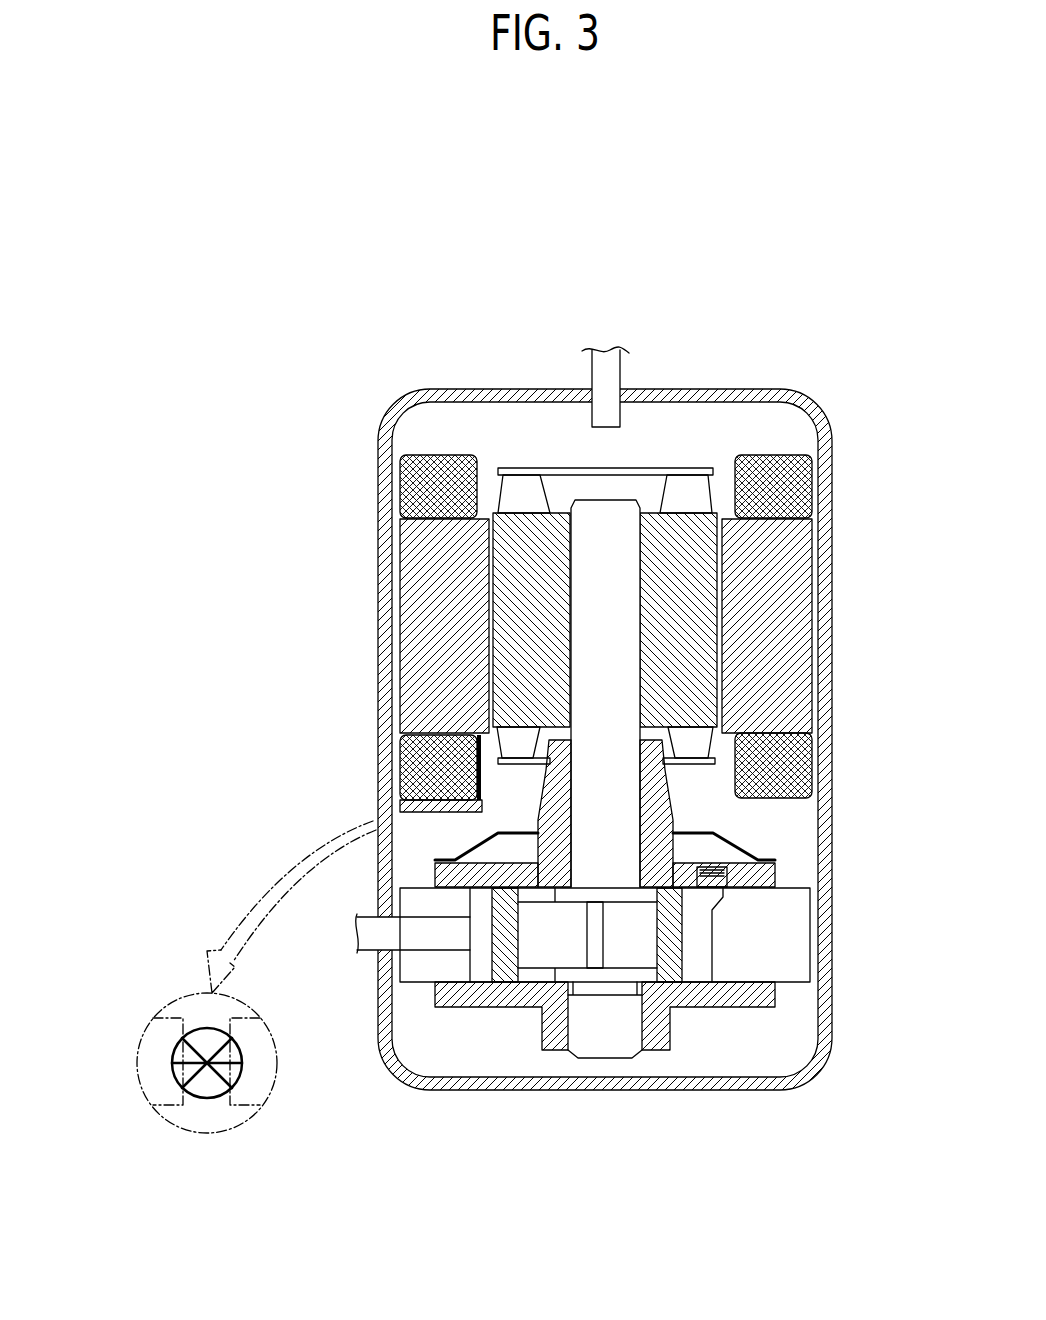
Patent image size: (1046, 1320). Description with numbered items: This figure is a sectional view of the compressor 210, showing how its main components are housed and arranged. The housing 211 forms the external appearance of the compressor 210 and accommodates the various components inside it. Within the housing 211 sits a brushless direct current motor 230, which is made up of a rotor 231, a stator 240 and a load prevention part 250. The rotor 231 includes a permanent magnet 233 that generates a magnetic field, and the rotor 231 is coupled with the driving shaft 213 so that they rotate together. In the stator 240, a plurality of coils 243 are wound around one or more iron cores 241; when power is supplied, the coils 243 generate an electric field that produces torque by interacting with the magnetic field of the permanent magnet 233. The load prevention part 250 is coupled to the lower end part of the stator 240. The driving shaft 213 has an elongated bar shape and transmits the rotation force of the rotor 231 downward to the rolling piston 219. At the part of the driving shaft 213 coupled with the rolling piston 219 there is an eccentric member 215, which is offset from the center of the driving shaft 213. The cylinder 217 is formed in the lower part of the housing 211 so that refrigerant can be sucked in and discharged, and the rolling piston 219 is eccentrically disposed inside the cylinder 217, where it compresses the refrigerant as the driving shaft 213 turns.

The compressor 210 is at (312, 306).
The housing 211 is at (833, 468).
The driving shaft 213 is at (607, 688).
The eccentric member 215 is at (557, 932).
The cylinder 217 is at (698, 925).
The rolling piston 219 is at (512, 957).
The brushless direct current motor 230 is at (217, 572).
The rotor 231 is at (520, 603).
The permanent magnet 233 is at (522, 745).
The stator 240 is at (268, 532).
The iron core 241 is at (415, 492).
The coil 243 is at (415, 563).
The load prevention part 250 is at (207, 1084).